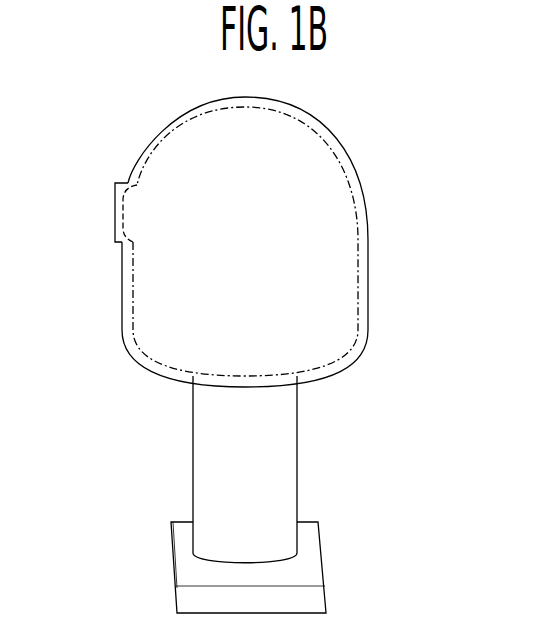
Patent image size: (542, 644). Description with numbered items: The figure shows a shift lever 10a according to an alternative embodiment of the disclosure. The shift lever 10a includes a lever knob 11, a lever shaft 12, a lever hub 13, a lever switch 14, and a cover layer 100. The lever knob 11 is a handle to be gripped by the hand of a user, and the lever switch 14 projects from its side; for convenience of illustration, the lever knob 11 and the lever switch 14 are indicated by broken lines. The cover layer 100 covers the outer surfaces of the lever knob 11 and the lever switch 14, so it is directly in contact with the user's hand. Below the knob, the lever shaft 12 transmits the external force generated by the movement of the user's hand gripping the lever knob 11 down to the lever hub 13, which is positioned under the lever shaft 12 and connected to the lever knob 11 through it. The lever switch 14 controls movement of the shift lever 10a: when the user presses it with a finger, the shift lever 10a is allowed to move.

The shift lever 10a is at (432, 97).
The cover layer 100 is at (307, 108).
The lever knob 11 is at (358, 248).
The lever shaft 12 is at (297, 468).
The lever hub 13 is at (322, 550).
The lever switch 14 is at (121, 209).